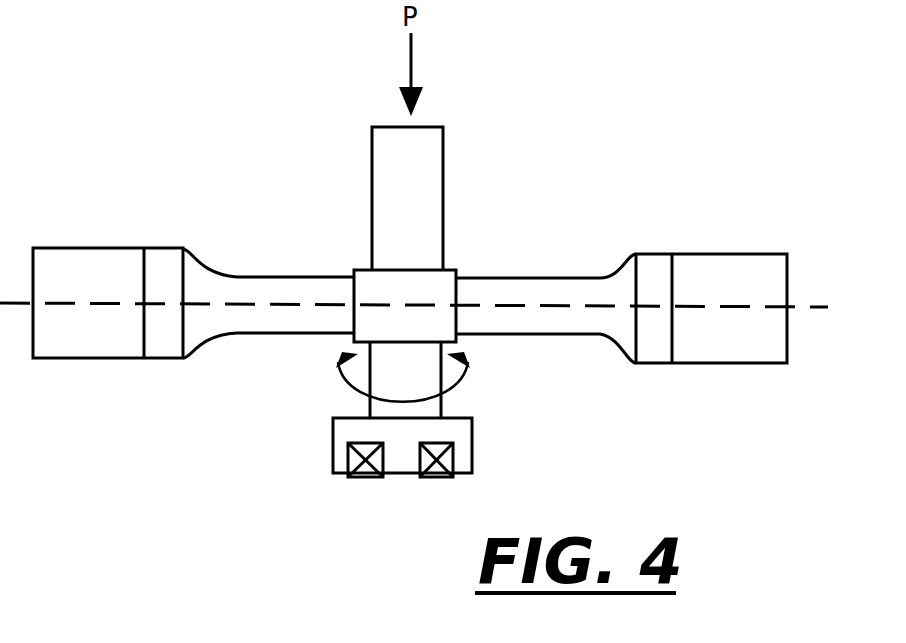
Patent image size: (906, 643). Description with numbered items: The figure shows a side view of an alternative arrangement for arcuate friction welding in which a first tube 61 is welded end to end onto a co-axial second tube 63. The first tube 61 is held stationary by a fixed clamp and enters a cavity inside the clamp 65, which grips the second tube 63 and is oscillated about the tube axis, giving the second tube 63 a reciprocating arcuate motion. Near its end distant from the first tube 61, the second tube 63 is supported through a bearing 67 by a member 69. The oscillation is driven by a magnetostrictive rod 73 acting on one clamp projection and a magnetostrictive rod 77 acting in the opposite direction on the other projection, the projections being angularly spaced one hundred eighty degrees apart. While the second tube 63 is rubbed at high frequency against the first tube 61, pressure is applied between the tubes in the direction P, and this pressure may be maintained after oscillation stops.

The first tube 61 is at (432, 185).
The clamp 65 is at (437, 282).
The second tube 63 is at (375, 400).
The member 69 is at (458, 435).
The bearing 67 is at (437, 477).
The magnetostrictive rod 77 is at (83, 265).
The magnetostrictive rod 73 is at (737, 268).